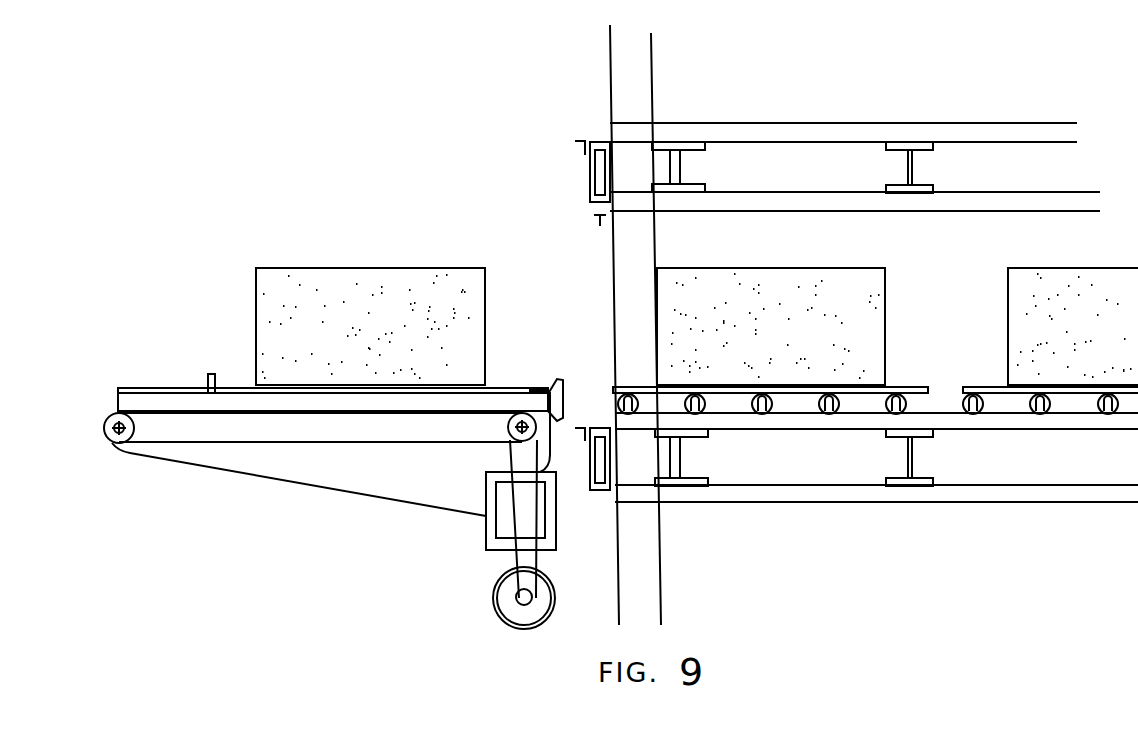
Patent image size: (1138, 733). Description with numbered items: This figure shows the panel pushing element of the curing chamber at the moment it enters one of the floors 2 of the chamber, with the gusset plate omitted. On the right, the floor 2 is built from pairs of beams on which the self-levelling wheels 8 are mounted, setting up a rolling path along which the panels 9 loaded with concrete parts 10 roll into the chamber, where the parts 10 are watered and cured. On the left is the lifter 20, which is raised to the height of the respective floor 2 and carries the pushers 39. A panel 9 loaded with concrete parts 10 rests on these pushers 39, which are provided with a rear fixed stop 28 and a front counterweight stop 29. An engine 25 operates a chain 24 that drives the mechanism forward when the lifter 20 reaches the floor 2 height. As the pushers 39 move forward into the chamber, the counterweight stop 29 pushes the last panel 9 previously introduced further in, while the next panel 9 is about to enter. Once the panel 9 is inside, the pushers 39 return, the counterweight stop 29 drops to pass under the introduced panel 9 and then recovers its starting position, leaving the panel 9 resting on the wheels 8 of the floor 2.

The floor 2 is at (942, 258).
The self-levelling wheel 8 is at (1098, 402).
The panel 9 is at (244, 388).
The concrete part 10 is at (327, 287).
The lifter 20 is at (415, 480).
The chain 24 is at (344, 442).
The engine 25 is at (508, 597).
The rear fixed stop 28 is at (205, 382).
The front counterweight stop 29 is at (556, 389).
The pusher 39 is at (280, 404).